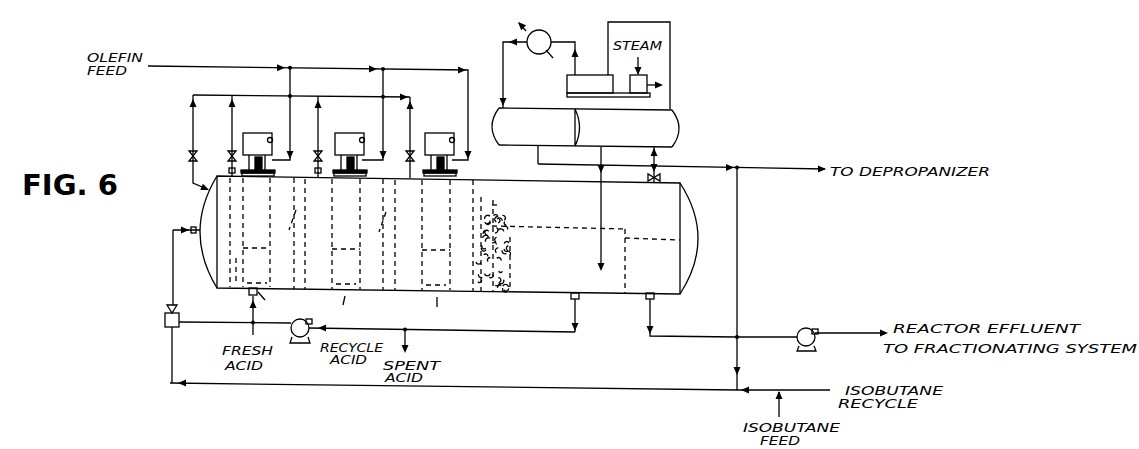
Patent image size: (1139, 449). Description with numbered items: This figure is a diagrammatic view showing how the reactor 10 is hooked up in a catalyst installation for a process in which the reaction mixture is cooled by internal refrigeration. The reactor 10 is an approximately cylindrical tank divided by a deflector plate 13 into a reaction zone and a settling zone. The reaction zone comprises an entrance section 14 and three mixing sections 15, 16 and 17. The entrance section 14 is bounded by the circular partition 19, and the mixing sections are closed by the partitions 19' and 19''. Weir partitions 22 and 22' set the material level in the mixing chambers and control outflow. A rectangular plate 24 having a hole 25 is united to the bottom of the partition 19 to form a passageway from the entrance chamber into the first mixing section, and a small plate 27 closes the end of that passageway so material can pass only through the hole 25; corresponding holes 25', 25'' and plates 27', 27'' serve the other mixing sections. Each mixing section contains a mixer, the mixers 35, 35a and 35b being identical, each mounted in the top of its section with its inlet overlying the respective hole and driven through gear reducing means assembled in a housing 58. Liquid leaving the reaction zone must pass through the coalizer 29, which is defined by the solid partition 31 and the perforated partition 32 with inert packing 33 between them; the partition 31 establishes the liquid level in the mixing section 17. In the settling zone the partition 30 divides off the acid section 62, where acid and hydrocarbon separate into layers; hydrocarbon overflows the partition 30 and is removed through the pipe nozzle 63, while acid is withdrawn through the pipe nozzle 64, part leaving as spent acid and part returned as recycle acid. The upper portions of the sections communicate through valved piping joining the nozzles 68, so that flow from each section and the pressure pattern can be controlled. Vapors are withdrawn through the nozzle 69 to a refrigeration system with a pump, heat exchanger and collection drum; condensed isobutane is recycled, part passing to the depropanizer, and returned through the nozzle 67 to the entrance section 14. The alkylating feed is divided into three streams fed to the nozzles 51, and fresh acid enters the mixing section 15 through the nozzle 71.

The reactor 10 is at (698, 197).
The deflector plate 13 is at (500, 206).
The entrance section 14 is at (203, 215).
The mixing section 15 is at (288, 191).
The mixing section 16 is at (378, 188).
The mixing section 17 is at (475, 192).
The circular partition 19 is at (232, 232).
The partition 19' is at (320, 234).
The partition 19'' is at (415, 235).
The weir partition 22 is at (285, 227).
The weir partition 22' is at (377, 228).
The rectangular plate 24 is at (232, 267).
The hole 25 is at (274, 304).
The hole 25' is at (346, 309).
The hole 25'' is at (440, 312).
The small plate 27 is at (271, 266).
The small plate 27' is at (361, 268).
The small plate 27'' is at (454, 271).
The coalizer 29 is at (520, 256).
The settling zone partition 30 is at (633, 232).
The partition 31 is at (473, 245).
The perforated partition 32 is at (512, 272).
The packing 33 is at (472, 244).
The mixer 35 is at (257, 232).
The mixer 35a is at (350, 234).
The mixer 35b is at (440, 235).
The nozzle 51 is at (348, 146).
The housing 58 is at (251, 133).
The acid section 62 is at (570, 220).
The pipe nozzle 63 is at (647, 300).
The pipe nozzle 64 is at (572, 299).
The nozzle 67 is at (193, 238).
The nozzle 68 is at (230, 168).
The nozzle 69 is at (660, 178).
The nozzle 71 is at (249, 292).